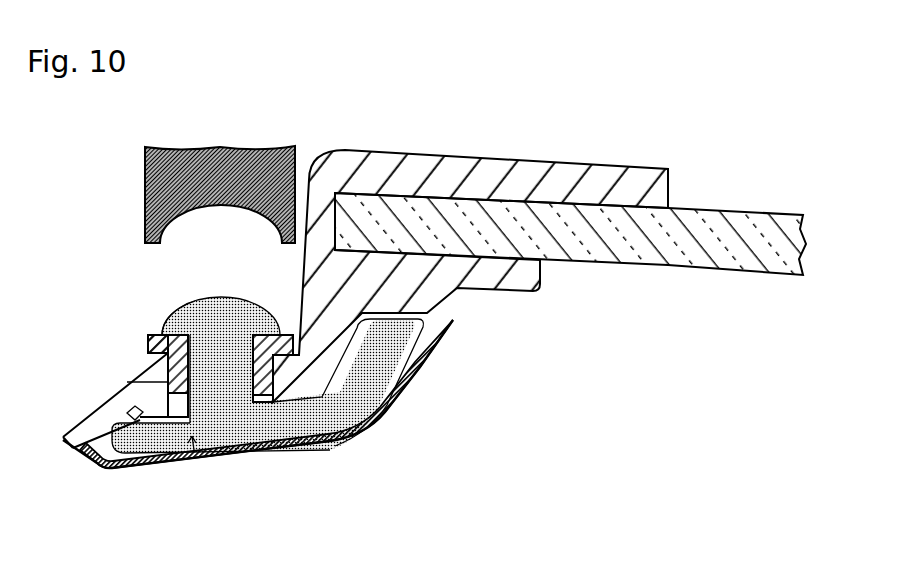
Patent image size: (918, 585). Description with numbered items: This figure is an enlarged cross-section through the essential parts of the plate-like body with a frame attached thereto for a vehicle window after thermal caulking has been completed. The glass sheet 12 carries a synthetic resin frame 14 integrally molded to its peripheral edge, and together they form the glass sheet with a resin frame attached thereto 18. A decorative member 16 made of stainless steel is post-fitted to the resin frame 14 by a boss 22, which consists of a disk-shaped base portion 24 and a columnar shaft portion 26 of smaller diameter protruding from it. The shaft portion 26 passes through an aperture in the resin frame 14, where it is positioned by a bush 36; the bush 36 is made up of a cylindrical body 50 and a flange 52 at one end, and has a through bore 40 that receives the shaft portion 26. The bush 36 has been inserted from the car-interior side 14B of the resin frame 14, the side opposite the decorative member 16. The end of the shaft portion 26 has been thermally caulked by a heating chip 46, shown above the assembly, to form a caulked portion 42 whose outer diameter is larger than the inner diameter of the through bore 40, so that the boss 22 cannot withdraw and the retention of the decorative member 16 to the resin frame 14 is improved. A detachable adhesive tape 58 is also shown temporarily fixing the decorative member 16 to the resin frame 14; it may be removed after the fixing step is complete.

The glass sheet 12 is at (695, 268).
The synthetic resin frame 14 is at (438, 285).
The car-interior side 14B is at (150, 345).
The decorative member 16 is at (171, 471).
The glass sheet with a resin frame attached thereto 18 is at (539, 268).
The boss 22 is at (198, 463).
The base portion 24 is at (308, 418).
The shaft portion 26 is at (224, 390).
The bush 36 is at (262, 400).
The through bore 40 is at (197, 323).
The caulked portion 42 is at (222, 302).
The heating chip 46 is at (226, 150).
The cylindrical body 50 is at (127, 382).
The flange 52 is at (150, 337).
The adhesive tape 58 is at (420, 366).